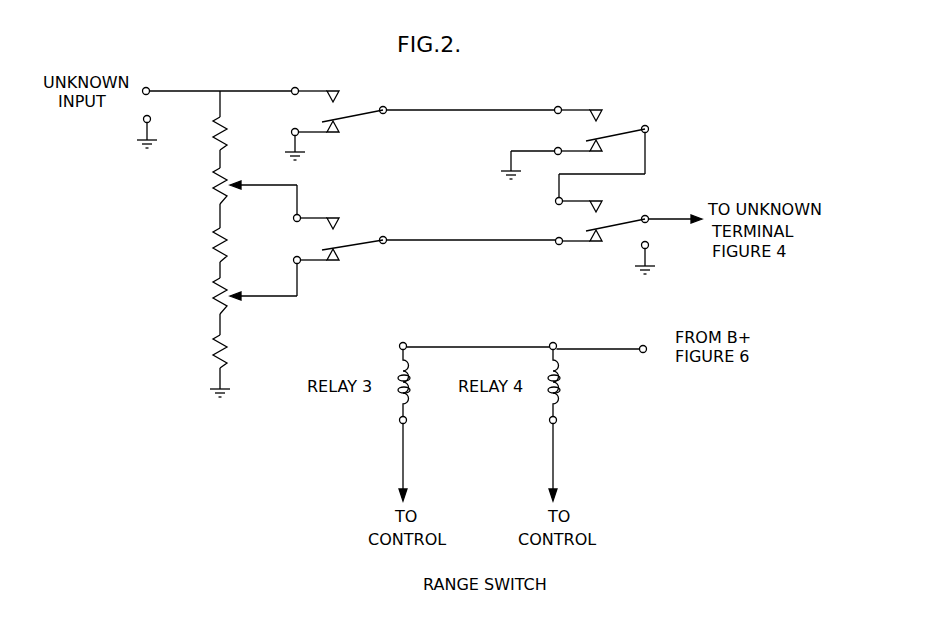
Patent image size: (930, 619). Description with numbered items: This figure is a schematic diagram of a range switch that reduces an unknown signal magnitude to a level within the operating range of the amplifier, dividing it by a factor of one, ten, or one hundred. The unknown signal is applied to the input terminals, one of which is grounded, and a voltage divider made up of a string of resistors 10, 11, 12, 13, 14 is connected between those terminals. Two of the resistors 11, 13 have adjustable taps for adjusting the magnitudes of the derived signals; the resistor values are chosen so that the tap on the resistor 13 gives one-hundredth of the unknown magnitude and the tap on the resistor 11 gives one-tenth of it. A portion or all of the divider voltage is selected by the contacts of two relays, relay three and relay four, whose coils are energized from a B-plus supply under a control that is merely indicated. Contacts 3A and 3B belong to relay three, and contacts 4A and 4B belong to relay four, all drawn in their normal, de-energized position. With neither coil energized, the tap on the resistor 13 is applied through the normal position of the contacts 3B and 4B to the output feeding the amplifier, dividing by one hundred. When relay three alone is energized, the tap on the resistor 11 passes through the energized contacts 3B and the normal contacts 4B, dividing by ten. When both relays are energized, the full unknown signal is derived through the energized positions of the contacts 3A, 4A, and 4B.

The resistor 10 is at (227, 125).
The resistor 11 is at (227, 175).
The resistor 12 is at (227, 237).
The resistor 13 is at (227, 285).
The resistor 14 is at (227, 345).
The contacts 3A is at (370, 93).
The contacts 3B is at (370, 222).
The contacts 4A is at (636, 108).
The contacts 4B is at (636, 207).